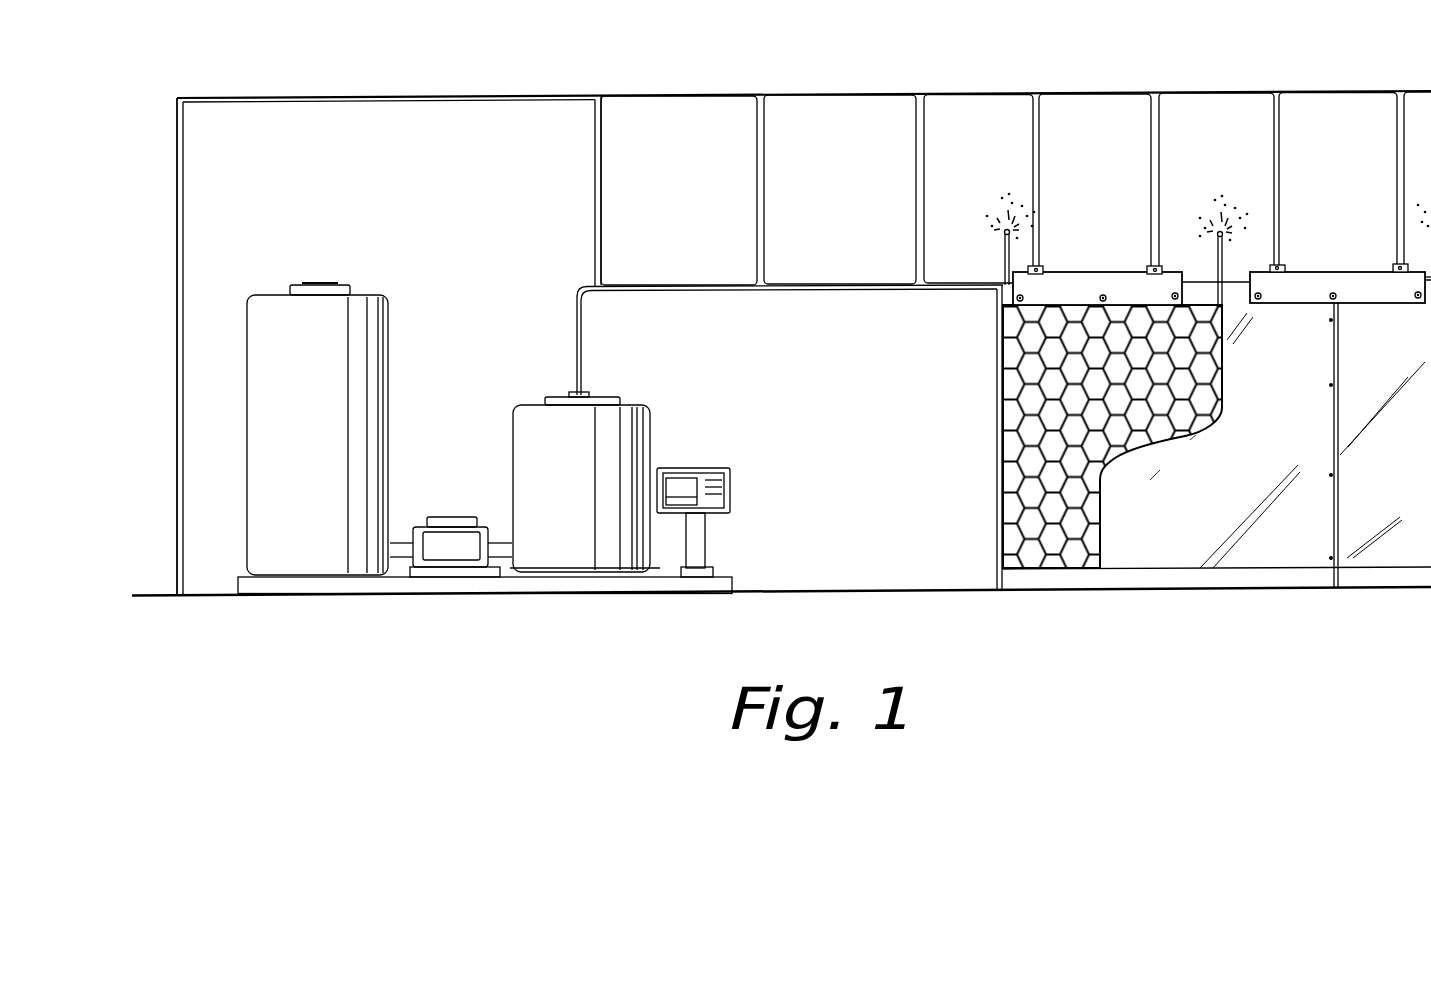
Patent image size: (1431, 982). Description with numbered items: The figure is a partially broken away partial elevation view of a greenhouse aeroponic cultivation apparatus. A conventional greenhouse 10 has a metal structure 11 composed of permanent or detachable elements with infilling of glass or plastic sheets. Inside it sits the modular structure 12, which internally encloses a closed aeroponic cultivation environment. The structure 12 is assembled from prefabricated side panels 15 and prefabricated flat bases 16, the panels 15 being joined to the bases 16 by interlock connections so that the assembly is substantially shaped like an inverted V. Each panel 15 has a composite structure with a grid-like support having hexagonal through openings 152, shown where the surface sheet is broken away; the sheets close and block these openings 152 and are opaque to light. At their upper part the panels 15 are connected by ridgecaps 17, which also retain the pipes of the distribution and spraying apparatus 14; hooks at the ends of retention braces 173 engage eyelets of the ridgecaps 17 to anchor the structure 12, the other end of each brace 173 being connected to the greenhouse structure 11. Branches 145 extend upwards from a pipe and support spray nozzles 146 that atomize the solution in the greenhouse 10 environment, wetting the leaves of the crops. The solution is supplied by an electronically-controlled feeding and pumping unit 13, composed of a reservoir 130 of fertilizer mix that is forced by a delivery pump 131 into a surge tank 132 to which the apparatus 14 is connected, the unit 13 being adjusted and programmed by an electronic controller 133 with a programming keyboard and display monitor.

The greenhouse 10 is at (781, 298).
The metal structure 11 is at (389, 345).
The modular structure 12 is at (795, 437).
The feeding and pumping unit 13 is at (543, 394).
The distribution and spraying apparatus 14 is at (628, 342).
The side panels 15 is at (1289, 445).
The flat bases 16 is at (1217, 630).
The ridgecaps 17 is at (1222, 243).
The reservoir 130 is at (349, 385).
The delivery pump 131 is at (451, 481).
The surge tank 132 is at (643, 461).
The electronic controller 133 is at (753, 513).
The branches 145 is at (951, 302).
The spray nozzles 146 is at (992, 172).
The hexagonal through openings 152 is at (1058, 436).
The retention braces 173 is at (1338, 187).